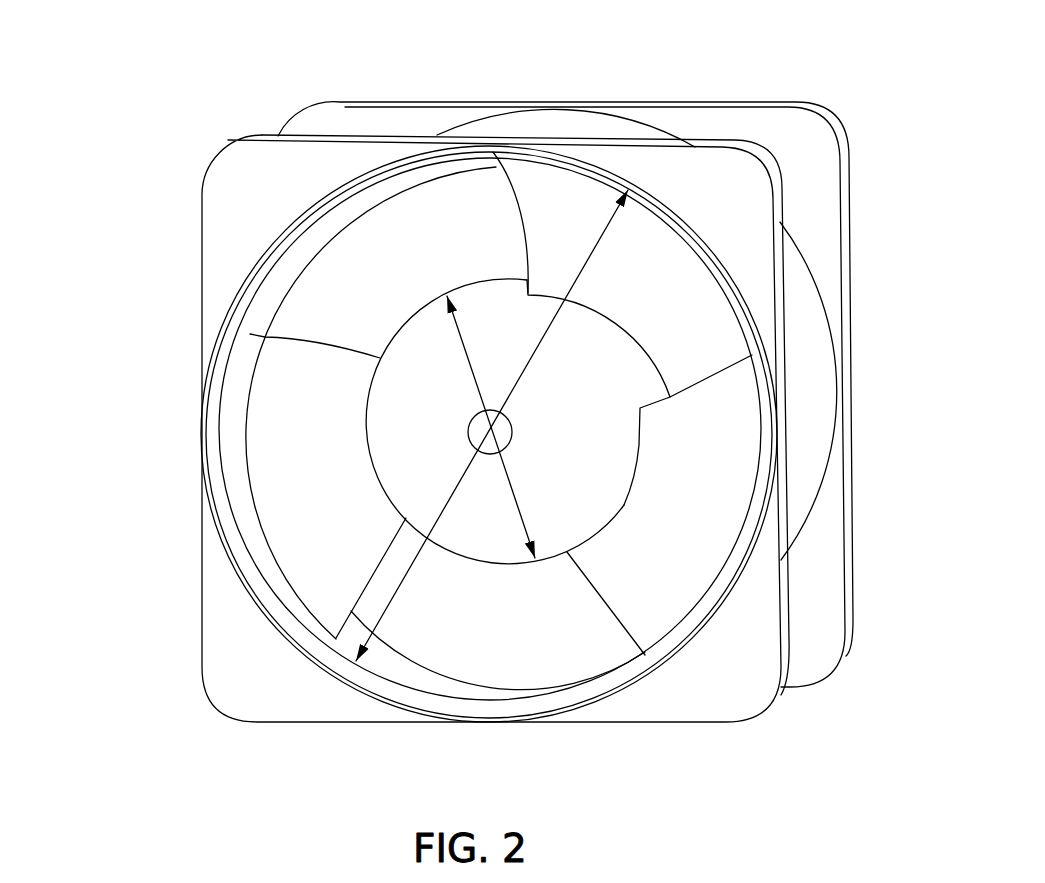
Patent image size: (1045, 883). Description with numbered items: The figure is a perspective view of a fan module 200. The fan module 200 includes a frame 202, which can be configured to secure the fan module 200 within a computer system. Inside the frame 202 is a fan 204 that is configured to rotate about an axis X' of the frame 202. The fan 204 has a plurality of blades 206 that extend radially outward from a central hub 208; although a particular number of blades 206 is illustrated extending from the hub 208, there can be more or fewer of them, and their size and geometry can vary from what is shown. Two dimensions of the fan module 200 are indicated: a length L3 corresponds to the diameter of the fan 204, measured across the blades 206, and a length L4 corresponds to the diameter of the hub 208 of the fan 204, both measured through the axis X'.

The fan module 200 is at (245, 73).
The frame 202 is at (705, 157).
The fan 204 is at (697, 320).
The blades 206 is at (433, 585).
The hub 208 is at (603, 490).
The axis X' is at (696, 399).
The length L3 is at (607, 240).
The length L4 is at (509, 482).